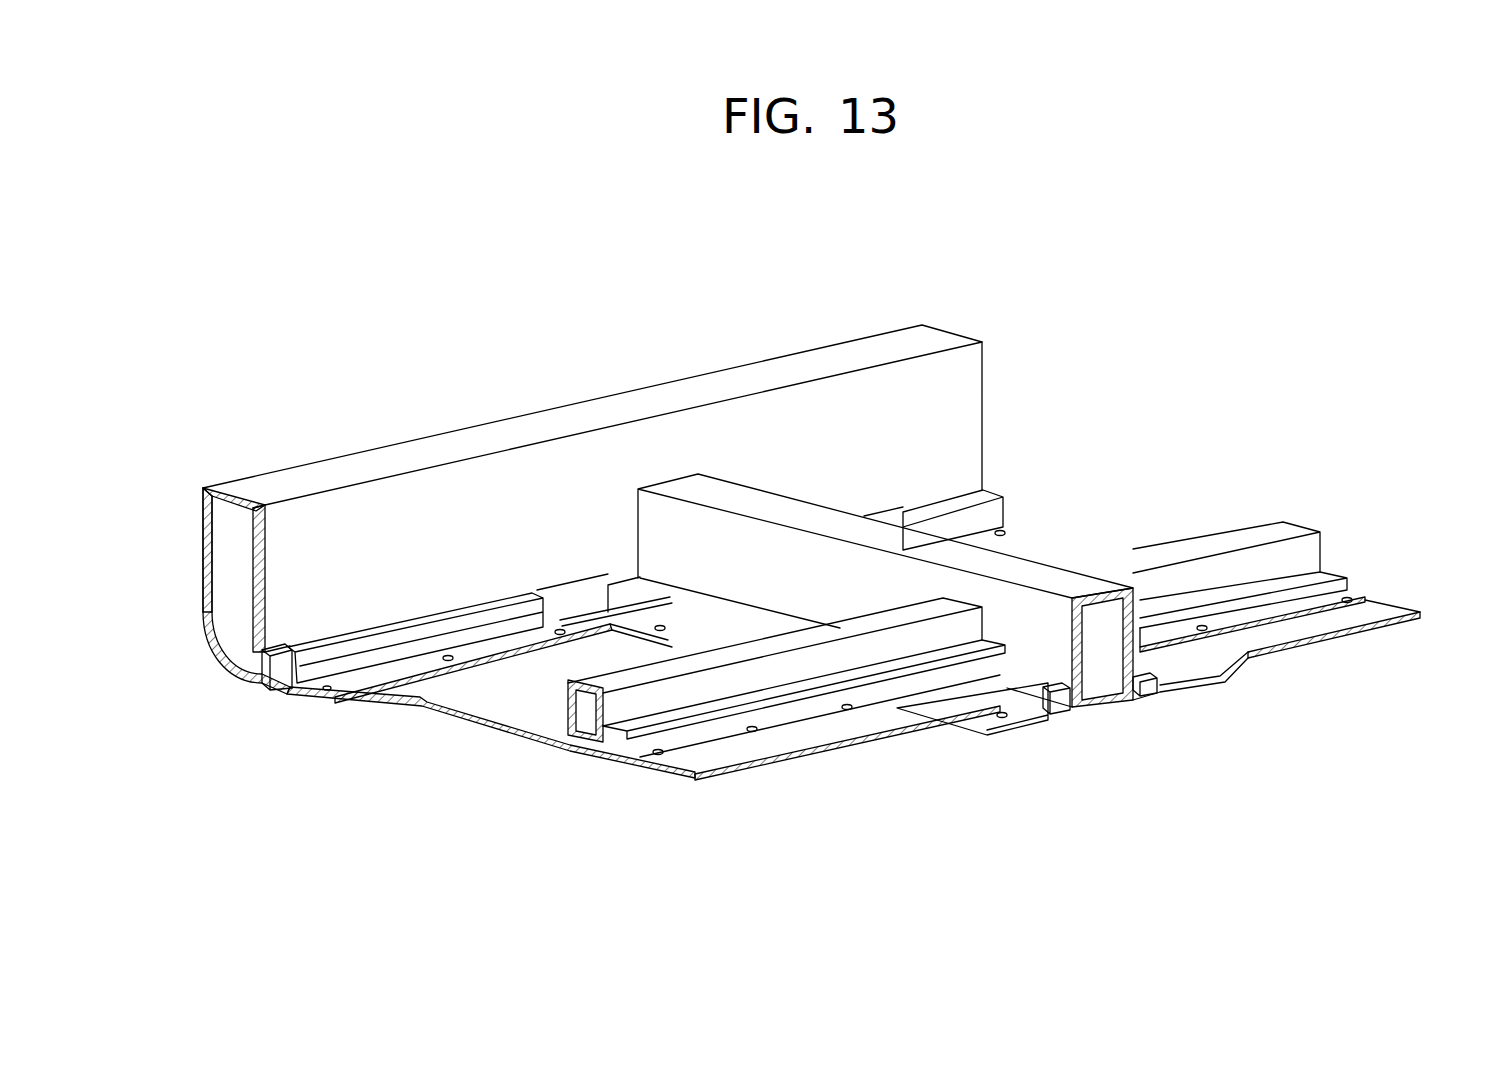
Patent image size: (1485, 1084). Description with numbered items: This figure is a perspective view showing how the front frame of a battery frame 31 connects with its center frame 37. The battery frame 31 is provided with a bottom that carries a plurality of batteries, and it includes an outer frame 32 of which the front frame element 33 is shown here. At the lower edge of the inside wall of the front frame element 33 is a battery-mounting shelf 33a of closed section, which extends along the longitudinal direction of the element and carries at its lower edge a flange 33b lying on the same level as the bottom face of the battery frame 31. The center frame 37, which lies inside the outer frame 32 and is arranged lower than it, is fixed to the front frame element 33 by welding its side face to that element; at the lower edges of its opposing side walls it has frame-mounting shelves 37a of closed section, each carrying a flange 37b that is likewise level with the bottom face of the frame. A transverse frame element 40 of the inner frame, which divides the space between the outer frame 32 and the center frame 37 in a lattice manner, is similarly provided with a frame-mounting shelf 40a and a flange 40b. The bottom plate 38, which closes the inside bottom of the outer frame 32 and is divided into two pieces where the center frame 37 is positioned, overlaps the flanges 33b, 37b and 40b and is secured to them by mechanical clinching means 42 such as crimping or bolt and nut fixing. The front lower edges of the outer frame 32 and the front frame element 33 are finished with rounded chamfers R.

The battery frame 31 is at (542, 405).
The outer frame 32 is at (685, 372).
The front frame element 33 is at (392, 465).
The battery-mounting shelf 33a is at (287, 652).
The flange 33b is at (360, 677).
The center frame 37 is at (1050, 577).
The frame-mounting shelf 37a is at (1062, 703).
The flange 37b is at (975, 708).
The bottom plate 38 is at (447, 707).
The transverse frame element 40 is at (855, 618).
The frame-mounting shelf 40a is at (545, 742).
The flange 40b is at (497, 728).
The mechanical clinching means 42 is at (448, 655).
The rounded chamfer R is at (213, 657).